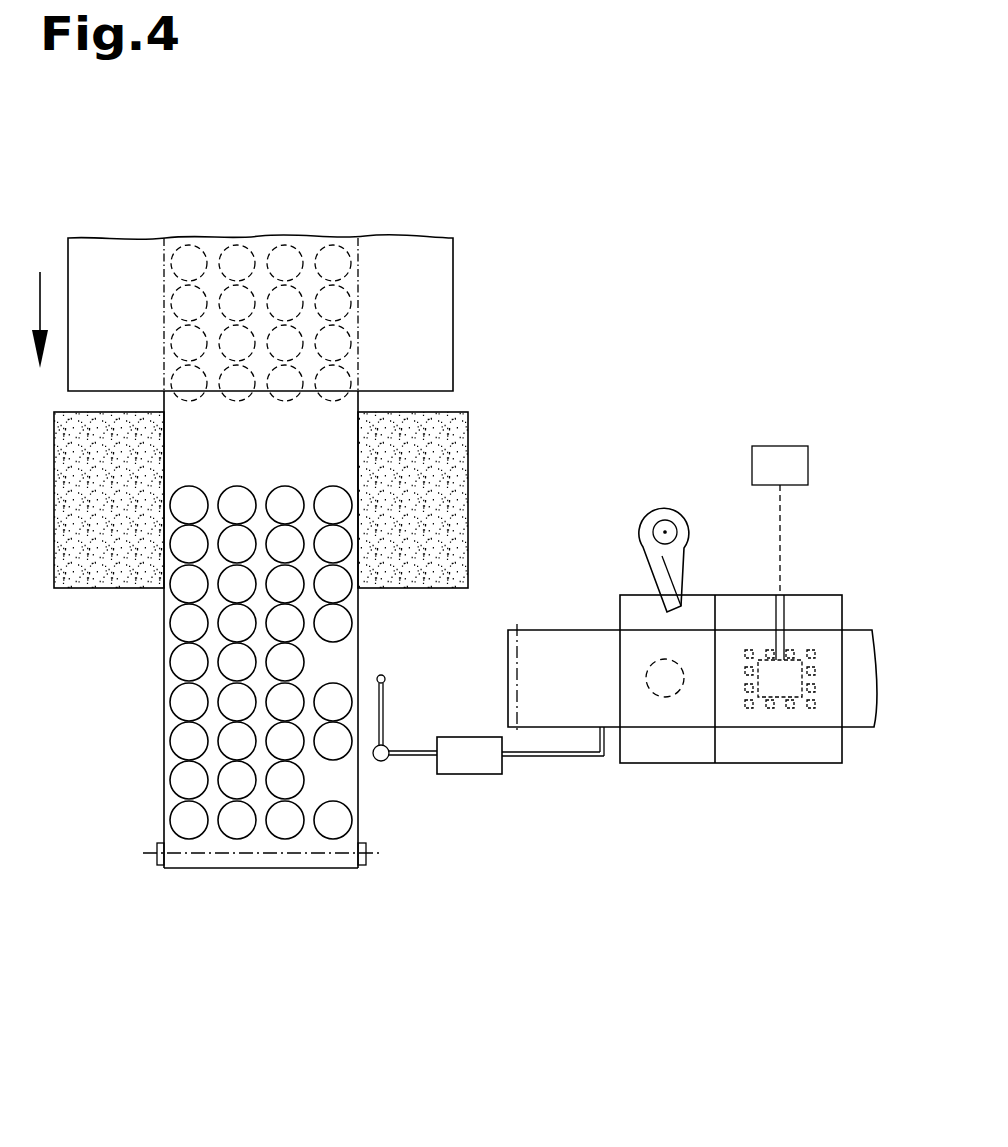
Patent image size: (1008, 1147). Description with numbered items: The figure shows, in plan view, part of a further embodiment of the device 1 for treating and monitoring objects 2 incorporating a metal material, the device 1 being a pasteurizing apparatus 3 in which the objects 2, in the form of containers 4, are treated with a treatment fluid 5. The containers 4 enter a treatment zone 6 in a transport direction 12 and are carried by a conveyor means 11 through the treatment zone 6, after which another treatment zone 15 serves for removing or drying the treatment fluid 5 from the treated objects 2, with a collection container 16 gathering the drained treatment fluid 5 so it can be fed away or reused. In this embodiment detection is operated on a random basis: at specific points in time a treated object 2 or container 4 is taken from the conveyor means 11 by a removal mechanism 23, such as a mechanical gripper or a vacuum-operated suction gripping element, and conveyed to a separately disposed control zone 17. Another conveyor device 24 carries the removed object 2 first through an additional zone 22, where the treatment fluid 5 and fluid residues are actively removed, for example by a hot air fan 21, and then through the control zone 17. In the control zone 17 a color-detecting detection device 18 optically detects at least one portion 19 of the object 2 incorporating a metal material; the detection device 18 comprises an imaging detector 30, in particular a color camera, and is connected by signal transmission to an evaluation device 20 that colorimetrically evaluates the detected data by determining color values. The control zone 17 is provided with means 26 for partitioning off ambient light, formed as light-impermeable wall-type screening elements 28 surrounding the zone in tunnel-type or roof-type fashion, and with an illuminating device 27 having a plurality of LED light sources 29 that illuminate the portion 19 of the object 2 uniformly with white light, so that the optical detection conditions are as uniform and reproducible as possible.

The device 1 is at (742, 195).
The objects 2 is at (427, 672).
The containers 4 is at (350, 817).
The pasteurizing apparatus 3 is at (192, 705).
The treatment fluid 5 is at (94, 573).
The treatment zone 6 is at (456, 291).
The conveyor means 11 is at (268, 862).
The transport direction 12 is at (38, 300).
The other treatment zone 15 is at (162, 570).
The collection container 16 is at (468, 476).
The control zone 17 is at (731, 821).
The color-detecting detection device 18 is at (820, 658).
The portion 19 is at (666, 690).
The evaluation device 20 is at (778, 446).
The hot air fan 21 is at (669, 496).
The additional zone 22 is at (700, 770).
The removal mechanism 23 is at (440, 737).
The other conveyor device 24 is at (542, 697).
The means for partitioning off and/or screening off ambient light 26 is at (779, 827).
The screening elements 28 is at (800, 765).
The illuminating device 27 is at (826, 671).
The light sources 29 is at (750, 650).
The imaging detector 30 is at (788, 675).